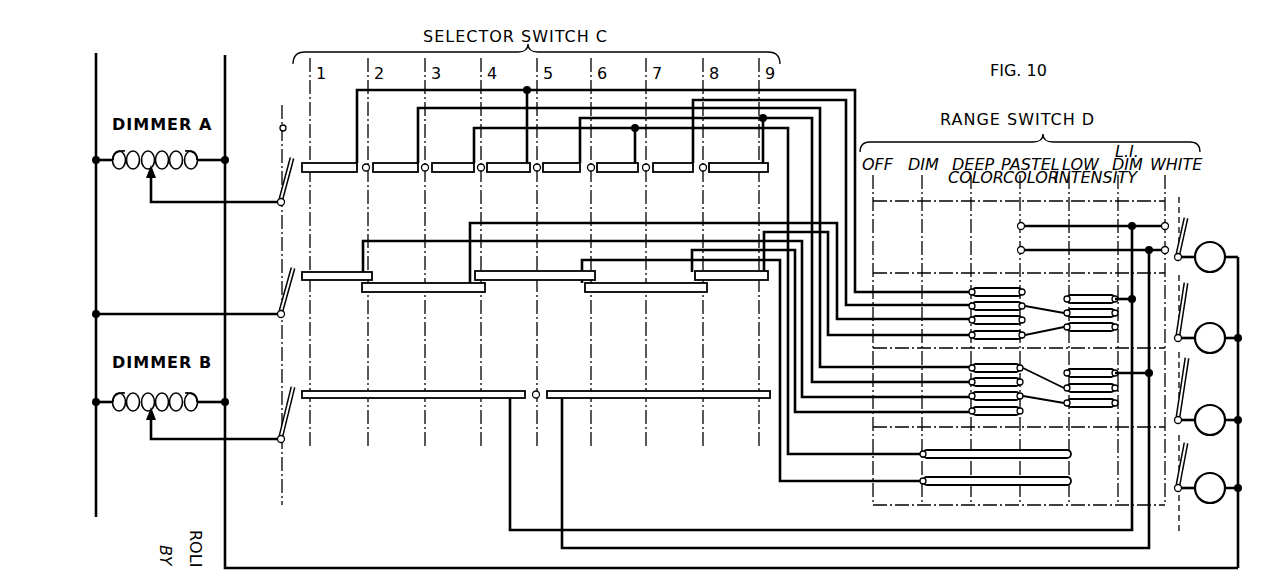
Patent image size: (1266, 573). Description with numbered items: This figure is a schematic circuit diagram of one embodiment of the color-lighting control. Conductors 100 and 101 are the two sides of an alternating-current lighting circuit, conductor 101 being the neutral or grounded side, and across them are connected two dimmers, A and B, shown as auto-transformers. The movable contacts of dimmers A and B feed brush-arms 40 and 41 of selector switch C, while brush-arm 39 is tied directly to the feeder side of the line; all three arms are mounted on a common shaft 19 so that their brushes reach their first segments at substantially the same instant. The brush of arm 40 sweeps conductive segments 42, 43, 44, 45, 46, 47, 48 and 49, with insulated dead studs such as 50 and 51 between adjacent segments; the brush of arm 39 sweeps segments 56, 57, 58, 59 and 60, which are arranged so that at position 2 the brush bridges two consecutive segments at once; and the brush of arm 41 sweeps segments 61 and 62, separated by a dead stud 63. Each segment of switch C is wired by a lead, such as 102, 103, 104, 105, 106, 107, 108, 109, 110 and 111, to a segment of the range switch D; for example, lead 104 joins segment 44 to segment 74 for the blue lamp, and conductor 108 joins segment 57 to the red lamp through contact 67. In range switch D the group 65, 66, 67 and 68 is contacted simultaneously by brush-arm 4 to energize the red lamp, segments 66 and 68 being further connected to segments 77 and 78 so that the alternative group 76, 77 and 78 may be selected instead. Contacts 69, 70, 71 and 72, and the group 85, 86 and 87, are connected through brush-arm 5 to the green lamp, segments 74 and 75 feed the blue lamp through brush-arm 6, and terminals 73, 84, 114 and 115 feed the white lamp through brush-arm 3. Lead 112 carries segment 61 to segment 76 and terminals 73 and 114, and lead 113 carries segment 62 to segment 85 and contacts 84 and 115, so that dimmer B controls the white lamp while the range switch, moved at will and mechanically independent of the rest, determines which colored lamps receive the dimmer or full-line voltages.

The conductor 100 is at (96, 68).
The conductor 101 is at (225, 82).
The shaft 19 is at (280, 126).
The brush-arm 40 is at (282, 172).
The brush-arm 39 is at (282, 290).
The brush-arm 41 is at (282, 406).
The conductive segment 42 is at (330, 163).
The conductive segment 43 is at (390, 163).
The conductive segment 44 is at (449, 163).
The conductive segment 45 is at (503, 172).
The conductive segment 46 is at (560, 172).
The conductive segment 47 is at (618, 172).
The conductive segment 48 is at (675, 172).
The conductive segment 49 is at (730, 163).
The dead stud 50 is at (364, 171).
The contact 51 is at (423, 171).
The conductive segment 56 is at (328, 272).
The conductive segment 57 is at (398, 283).
The conductive segment 58 is at (510, 271).
The conductive segment 59 is at (668, 292).
The conductive segment 60 is at (733, 280).
The conductive segment 61 is at (392, 391).
The conductive segment 62 is at (665, 391).
The contact 63 is at (539, 391).
The range switch contact 65 is at (1007, 287).
The range switch segment 66 is at (1016, 301).
The range switch contact 67 is at (1008, 324).
The range switch segment 68 is at (1016, 339).
The range switch contact 69 is at (1016, 371).
The range switch contact 70 is at (1007, 387).
The range switch contact 71 is at (1026, 400).
The range switch contact 72 is at (1007, 420).
The terminal 73 is at (1092, 219).
The segment 74 is at (995, 447).
The segment 75 is at (995, 474).
The conductive segment 76 is at (1100, 291).
The segment 77 is at (1088, 310).
The segment 78 is at (1091, 337).
The contact 84 is at (1092, 243).
The segment 85 is at (1108, 365).
The contact 86 is at (1090, 392).
The contact 87 is at (1100, 407).
The conductor 102 is at (416, 90).
The conductor 103 is at (472, 110).
The lead 104 is at (524, 130).
The conductor 105 is at (580, 140).
The conductor 106 is at (856, 122).
The conductor 107 is at (392, 241).
The conductor 108 is at (505, 223).
The conductor 109 is at (638, 260).
The conductor 110 is at (727, 250).
The conductor 111 is at (771, 232).
The lead 112 is at (510, 499).
The lead 113 is at (562, 517).
The terminal 114 is at (1163, 226).
The contact 115 is at (1163, 250).
The switch position 2 is at (1187, 211).
The brush-arm 3 is at (1188, 236).
The brush-arm 4 is at (1190, 306).
The brush-arm 5 is at (1190, 383).
The brush-arm 6 is at (1190, 465).